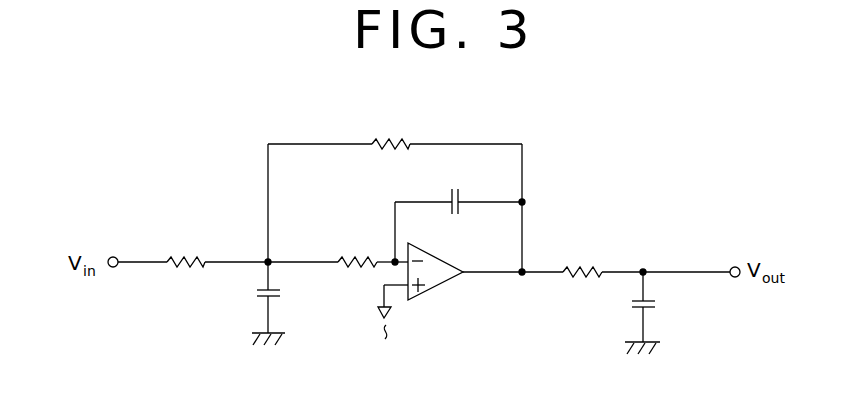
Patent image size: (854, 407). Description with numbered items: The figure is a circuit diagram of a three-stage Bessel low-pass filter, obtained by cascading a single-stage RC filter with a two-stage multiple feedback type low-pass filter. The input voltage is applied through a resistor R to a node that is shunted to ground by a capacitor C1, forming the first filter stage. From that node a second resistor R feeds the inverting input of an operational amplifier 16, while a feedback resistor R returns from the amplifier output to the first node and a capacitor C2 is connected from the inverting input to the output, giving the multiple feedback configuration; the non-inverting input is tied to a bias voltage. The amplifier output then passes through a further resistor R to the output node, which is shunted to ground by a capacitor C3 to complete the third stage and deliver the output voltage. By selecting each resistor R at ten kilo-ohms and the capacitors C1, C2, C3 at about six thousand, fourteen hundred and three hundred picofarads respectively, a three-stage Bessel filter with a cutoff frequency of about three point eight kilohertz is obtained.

The resistor R is at (189, 256).
The capacitor C1 is at (250, 294).
The capacitor C2 is at (460, 185).
The capacitor C3 is at (623, 305).
The operational amplifier 16 is at (435, 284).